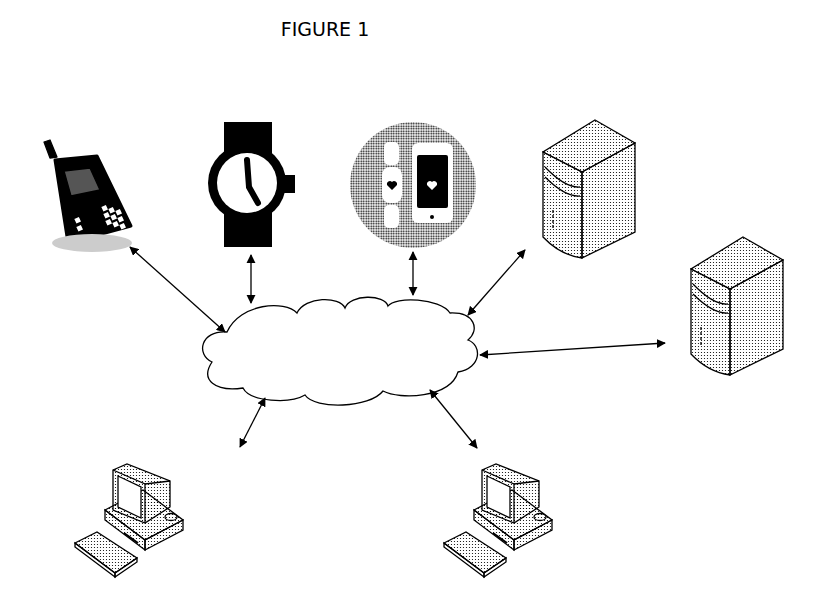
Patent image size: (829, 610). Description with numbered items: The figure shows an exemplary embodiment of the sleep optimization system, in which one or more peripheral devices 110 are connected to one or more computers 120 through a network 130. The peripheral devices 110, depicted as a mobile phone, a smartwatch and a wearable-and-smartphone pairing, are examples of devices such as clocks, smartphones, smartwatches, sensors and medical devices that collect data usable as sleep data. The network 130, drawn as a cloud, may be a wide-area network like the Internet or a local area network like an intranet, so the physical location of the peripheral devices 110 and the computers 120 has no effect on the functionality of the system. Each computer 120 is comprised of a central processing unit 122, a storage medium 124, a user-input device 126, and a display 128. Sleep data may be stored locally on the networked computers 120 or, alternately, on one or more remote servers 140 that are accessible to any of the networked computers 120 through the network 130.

The peripheral devices 110 is at (242, 187).
The computers 120 is at (313, 498).
The central processing unit 122 is at (157, 482).
The storage medium 124 is at (190, 515).
The user-input device 126 is at (80, 537).
The display 128 is at (130, 502).
The network 130 is at (340, 351).
The remote servers 140 is at (663, 261).